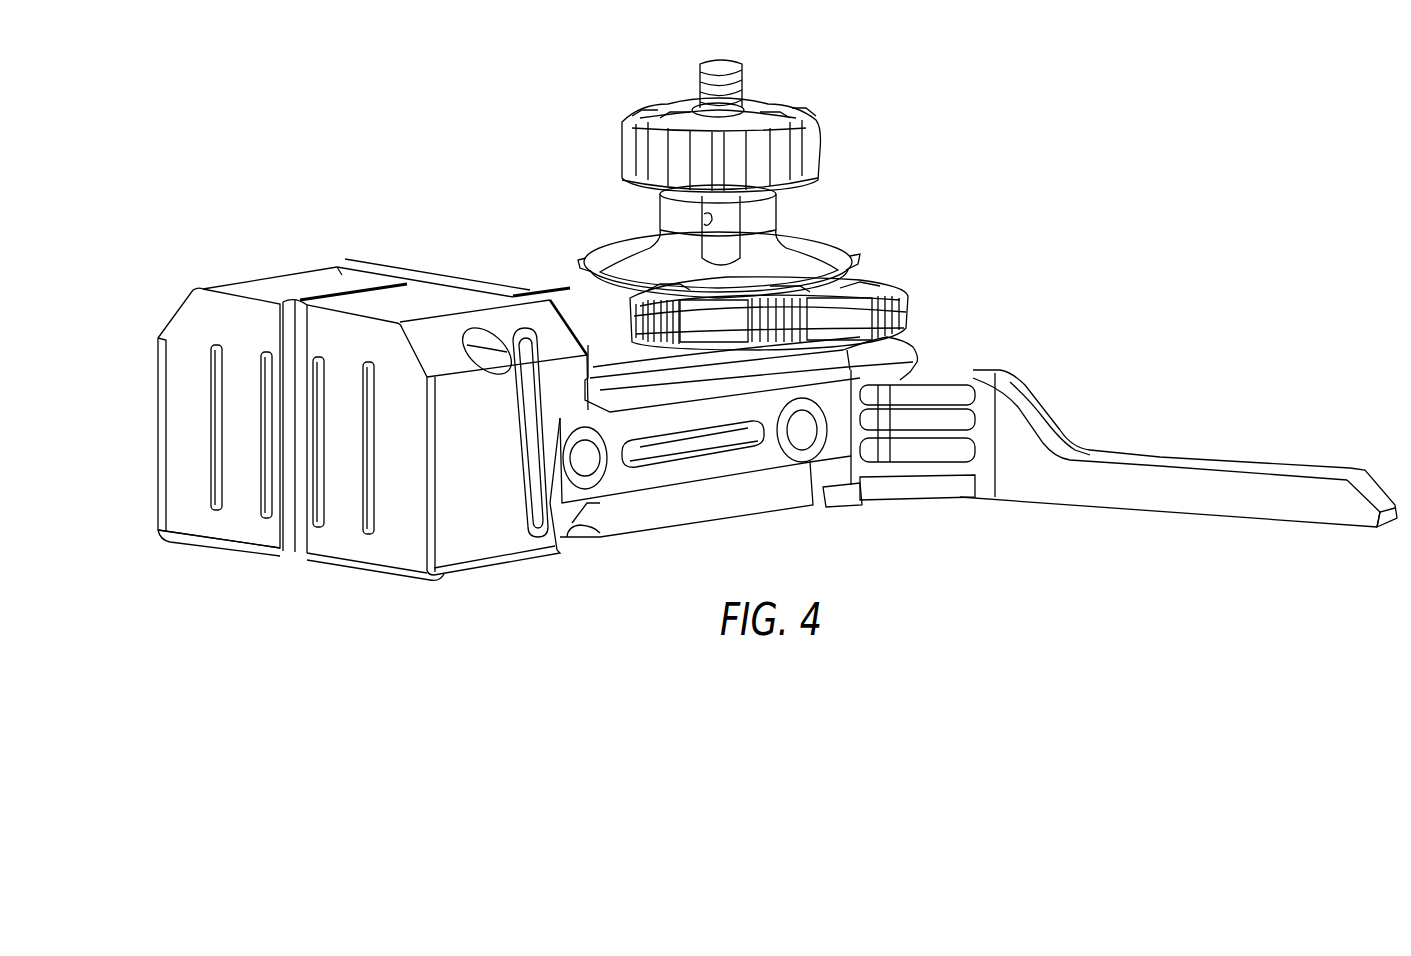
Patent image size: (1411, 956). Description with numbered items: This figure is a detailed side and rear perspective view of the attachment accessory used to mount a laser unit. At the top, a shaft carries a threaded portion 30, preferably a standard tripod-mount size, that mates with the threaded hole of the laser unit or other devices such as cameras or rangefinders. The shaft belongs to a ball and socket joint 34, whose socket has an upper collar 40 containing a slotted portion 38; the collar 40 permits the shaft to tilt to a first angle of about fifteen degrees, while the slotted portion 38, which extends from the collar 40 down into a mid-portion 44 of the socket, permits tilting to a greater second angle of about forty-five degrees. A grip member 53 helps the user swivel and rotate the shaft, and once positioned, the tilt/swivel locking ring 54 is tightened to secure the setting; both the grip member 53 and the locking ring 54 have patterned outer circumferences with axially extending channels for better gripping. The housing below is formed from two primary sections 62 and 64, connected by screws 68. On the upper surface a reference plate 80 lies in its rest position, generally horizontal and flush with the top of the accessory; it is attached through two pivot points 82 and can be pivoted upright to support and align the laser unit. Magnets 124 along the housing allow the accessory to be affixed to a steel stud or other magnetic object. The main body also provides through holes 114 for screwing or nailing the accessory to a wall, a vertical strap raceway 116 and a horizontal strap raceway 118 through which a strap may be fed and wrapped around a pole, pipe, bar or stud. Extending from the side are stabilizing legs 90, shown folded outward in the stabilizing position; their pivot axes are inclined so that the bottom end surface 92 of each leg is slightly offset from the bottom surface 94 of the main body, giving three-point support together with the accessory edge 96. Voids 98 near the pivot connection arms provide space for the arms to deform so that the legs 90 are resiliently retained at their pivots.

The threaded portion 30 is at (746, 80).
The grip member 53 is at (820, 146).
The ball and socket joint 34 is at (861, 193).
The slotted portion 38 is at (703, 220).
The collar 40 is at (790, 204).
The mid-portion 44 is at (656, 258).
The tilt/swivel locking ring 54 is at (906, 306).
The primary section 62 is at (176, 360).
The primary section 64 is at (400, 540).
The reference plate 80 is at (472, 264).
The screws 68 is at (480, 337).
The pivot points 82 is at (350, 283).
The magnets 124 is at (215, 510).
The accessory edge 96 is at (176, 538).
The bottom surface 94 is at (735, 516).
The through holes 114 is at (586, 460).
The vertical strap raceway 116 is at (586, 518).
The horizontal strap raceway 118 is at (670, 450).
The voids 98 is at (915, 392).
The stabilizing legs 90 is at (1203, 495).
The bottom end surface 92 is at (1386, 514).